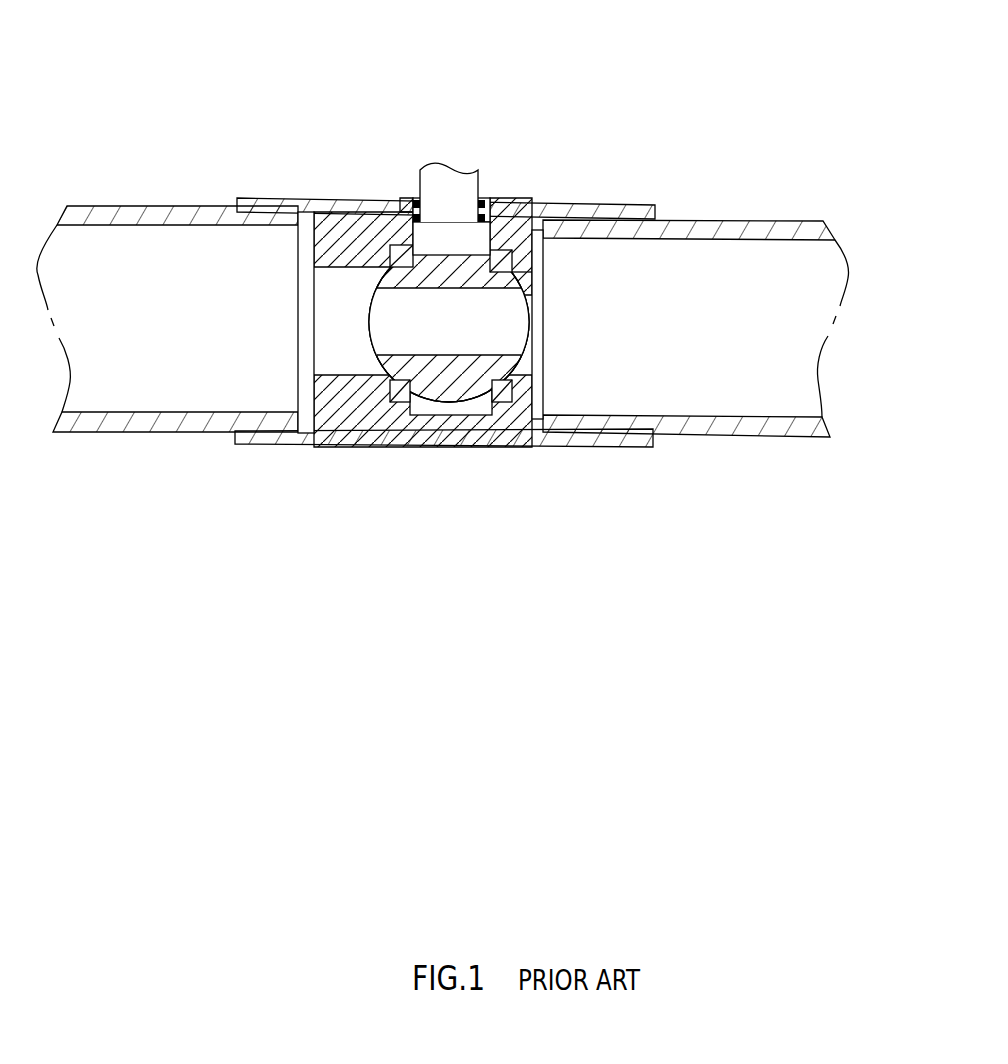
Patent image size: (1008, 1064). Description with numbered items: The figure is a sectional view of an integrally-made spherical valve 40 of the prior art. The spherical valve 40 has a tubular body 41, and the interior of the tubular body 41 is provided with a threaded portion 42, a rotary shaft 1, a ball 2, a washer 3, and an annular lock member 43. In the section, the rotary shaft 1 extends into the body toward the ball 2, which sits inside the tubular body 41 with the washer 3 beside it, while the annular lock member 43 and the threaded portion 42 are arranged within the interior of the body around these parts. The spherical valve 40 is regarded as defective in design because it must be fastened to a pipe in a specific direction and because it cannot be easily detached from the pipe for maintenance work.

The spherical valve 40 is at (563, 98).
The rotary shaft 1 is at (468, 190).
The ball 2 is at (506, 310).
The washer 3 is at (504, 247).
The tubular body 41 is at (503, 436).
The threaded portion 42 is at (306, 220).
The annular lock member 43 is at (352, 230).